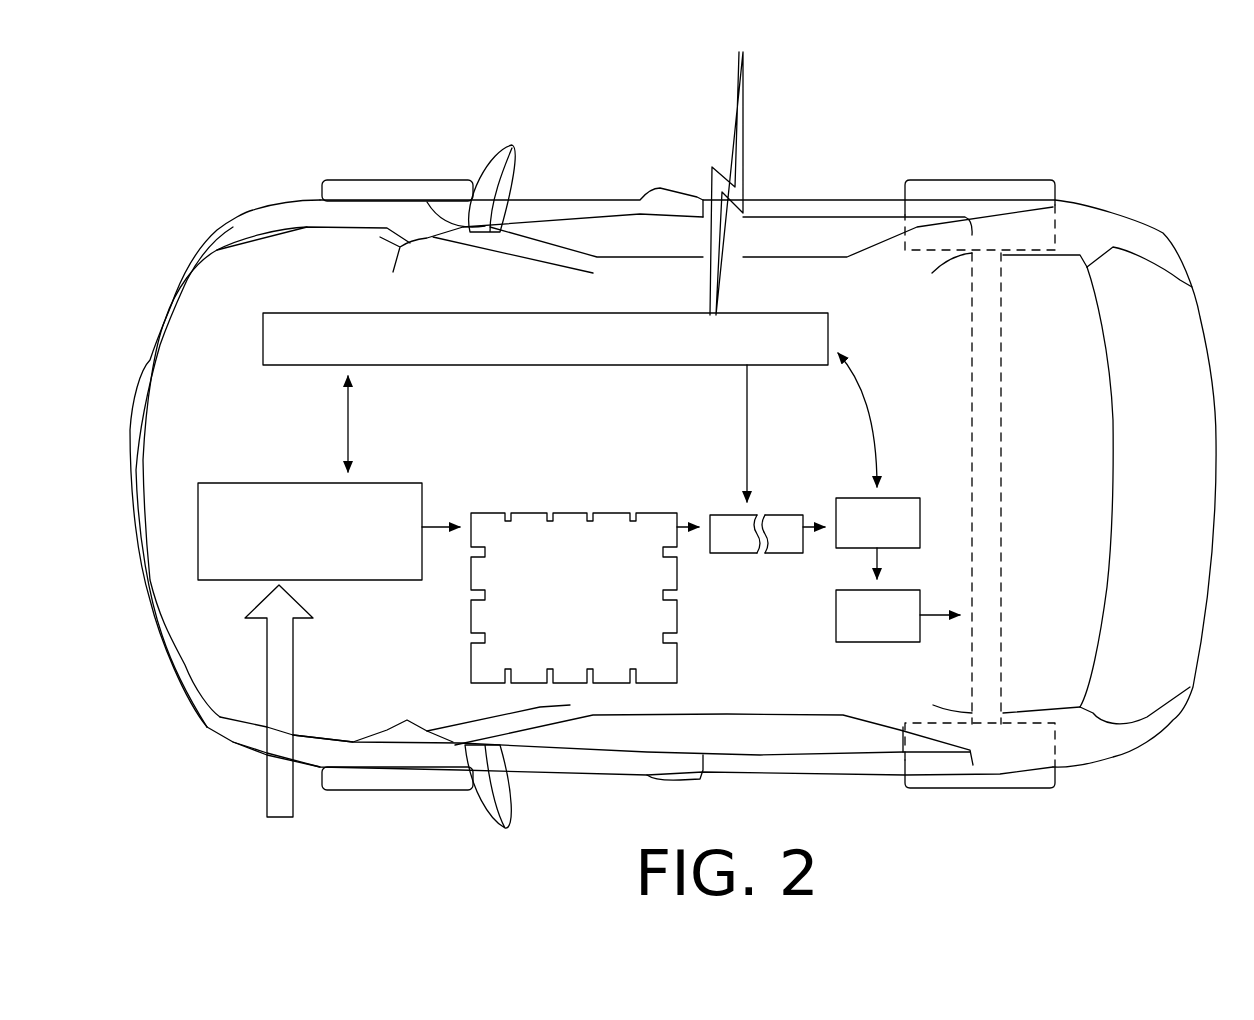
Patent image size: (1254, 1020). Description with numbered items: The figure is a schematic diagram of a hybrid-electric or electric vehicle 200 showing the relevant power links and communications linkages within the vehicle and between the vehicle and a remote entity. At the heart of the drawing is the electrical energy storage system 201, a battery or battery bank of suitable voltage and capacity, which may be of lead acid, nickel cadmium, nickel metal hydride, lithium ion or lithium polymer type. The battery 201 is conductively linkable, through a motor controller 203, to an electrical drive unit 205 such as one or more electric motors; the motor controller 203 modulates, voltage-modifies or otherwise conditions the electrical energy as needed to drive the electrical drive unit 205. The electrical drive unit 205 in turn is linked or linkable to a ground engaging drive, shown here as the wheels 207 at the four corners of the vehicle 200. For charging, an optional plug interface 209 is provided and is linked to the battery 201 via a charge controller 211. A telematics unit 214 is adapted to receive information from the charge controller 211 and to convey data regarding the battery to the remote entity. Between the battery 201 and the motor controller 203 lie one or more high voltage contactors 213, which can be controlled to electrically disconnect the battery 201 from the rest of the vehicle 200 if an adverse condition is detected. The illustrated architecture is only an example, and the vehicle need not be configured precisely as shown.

The vehicle 200 is at (796, 172).
The electrical energy storage system 201 is at (558, 600).
The motor controller 203 is at (857, 537).
The electrical drive unit 205 is at (857, 631).
The wheels 207 is at (995, 195).
The plug interface 209 is at (267, 817).
The charge controller 211 is at (288, 544).
The high voltage contactors 213 is at (733, 513).
The telematics unit 214 is at (527, 352).